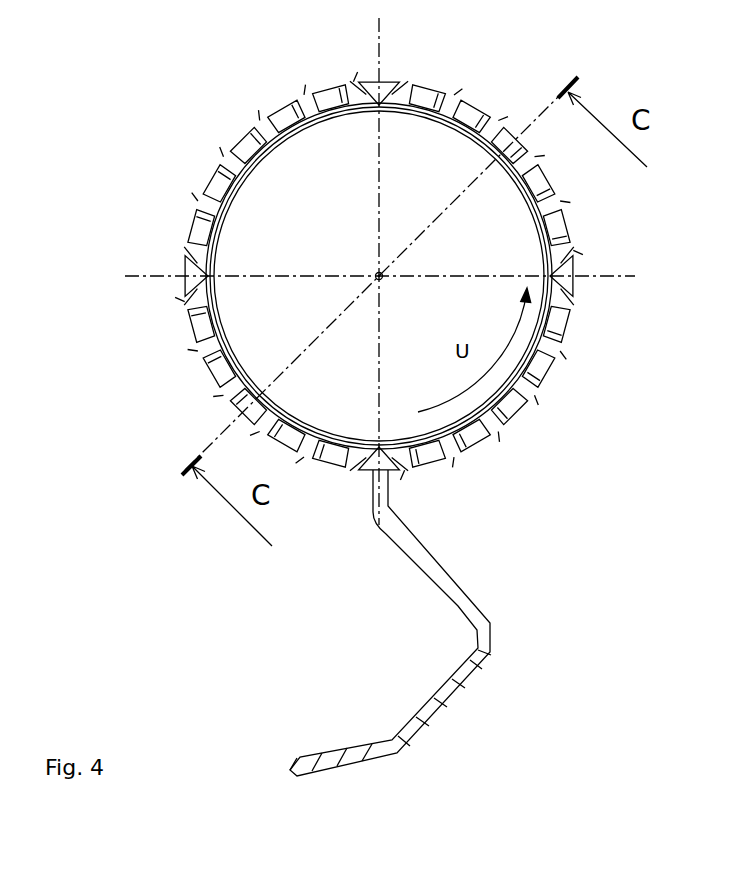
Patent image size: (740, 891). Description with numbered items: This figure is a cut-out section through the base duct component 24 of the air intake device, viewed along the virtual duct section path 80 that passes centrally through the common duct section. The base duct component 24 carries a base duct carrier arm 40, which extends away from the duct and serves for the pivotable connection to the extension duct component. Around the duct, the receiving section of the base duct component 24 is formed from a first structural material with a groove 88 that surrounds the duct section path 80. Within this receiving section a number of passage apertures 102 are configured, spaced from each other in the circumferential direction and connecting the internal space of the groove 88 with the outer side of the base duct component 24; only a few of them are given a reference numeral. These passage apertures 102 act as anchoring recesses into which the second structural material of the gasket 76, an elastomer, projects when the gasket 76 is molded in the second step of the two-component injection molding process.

The base duct component 24 is at (193, 215).
The base duct carrier arm 40 is at (437, 600).
The gasket 76 is at (262, 140).
The duct section path 80 is at (376, 276).
The groove 88 is at (437, 118).
The passage apertures 102 is at (272, 112).